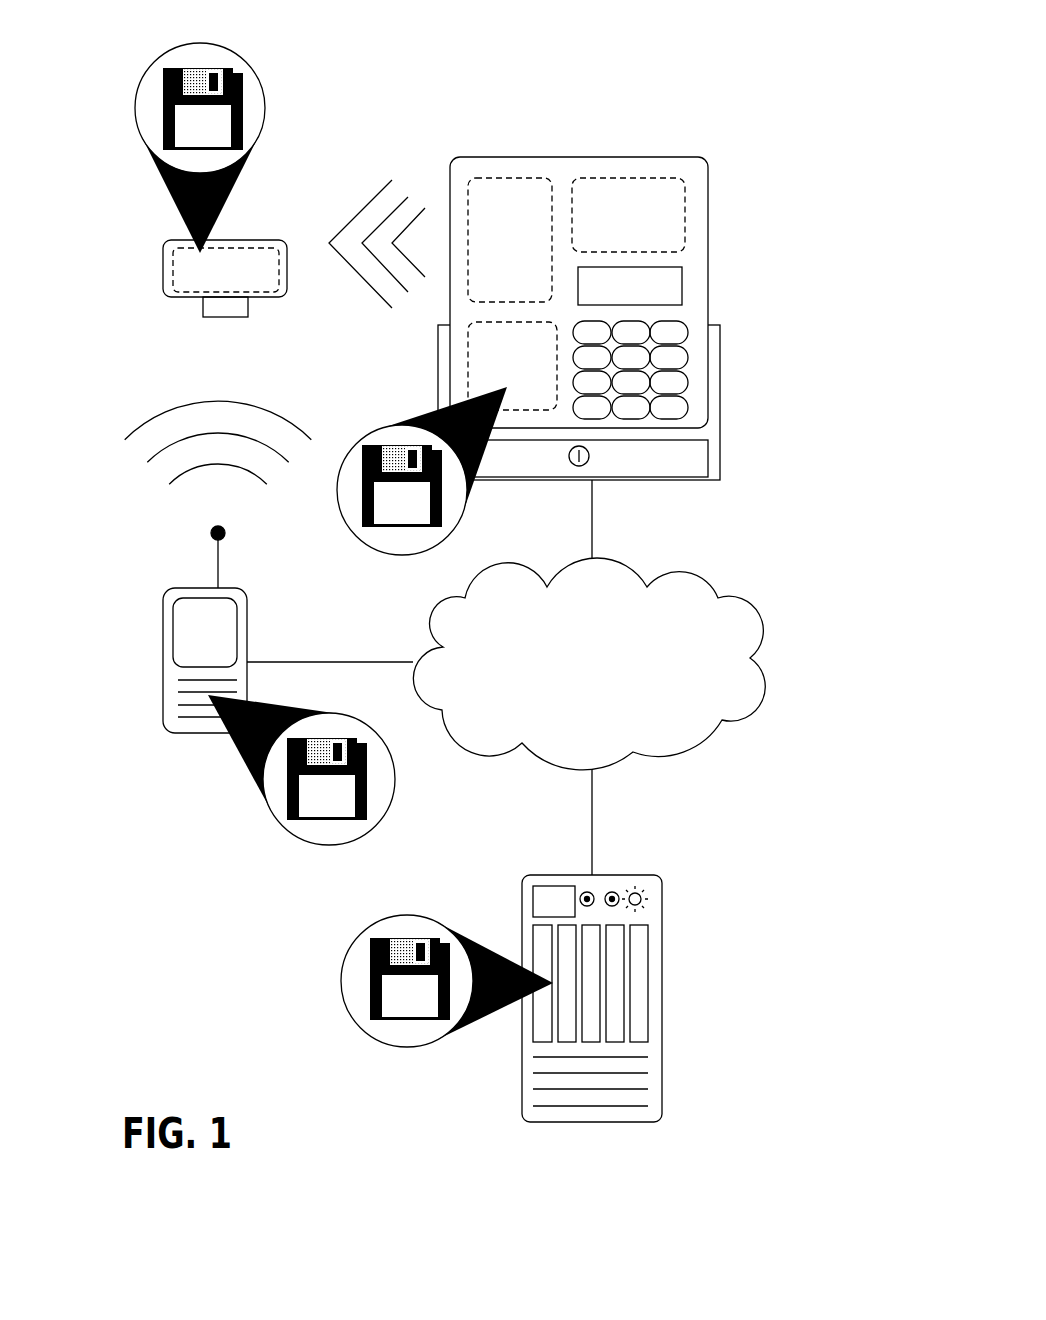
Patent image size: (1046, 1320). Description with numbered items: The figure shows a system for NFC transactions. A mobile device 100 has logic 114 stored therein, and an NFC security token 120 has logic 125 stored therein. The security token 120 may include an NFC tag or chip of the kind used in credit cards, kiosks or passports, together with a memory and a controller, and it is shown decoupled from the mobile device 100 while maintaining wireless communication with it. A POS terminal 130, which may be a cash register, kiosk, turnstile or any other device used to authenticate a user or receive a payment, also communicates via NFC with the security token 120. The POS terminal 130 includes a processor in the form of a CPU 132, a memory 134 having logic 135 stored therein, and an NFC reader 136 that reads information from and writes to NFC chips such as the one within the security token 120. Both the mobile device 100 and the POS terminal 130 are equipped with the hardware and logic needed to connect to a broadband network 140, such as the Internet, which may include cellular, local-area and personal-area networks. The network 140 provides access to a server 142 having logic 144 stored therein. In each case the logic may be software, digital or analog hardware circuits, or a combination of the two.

The mobile device 100 is at (163, 660).
The logic 114 is at (352, 820).
The NFC security token 120 is at (163, 250).
The logic 125 is at (243, 120).
The POS terminal 130 is at (708, 283).
The CPU 132 is at (628, 178).
The memory 134 is at (468, 335).
The logic 135 is at (378, 528).
The NFC reader 136 is at (503, 178).
The broadband network 140 is at (705, 578).
The server 142 is at (662, 995).
The logic 144 is at (385, 1022).